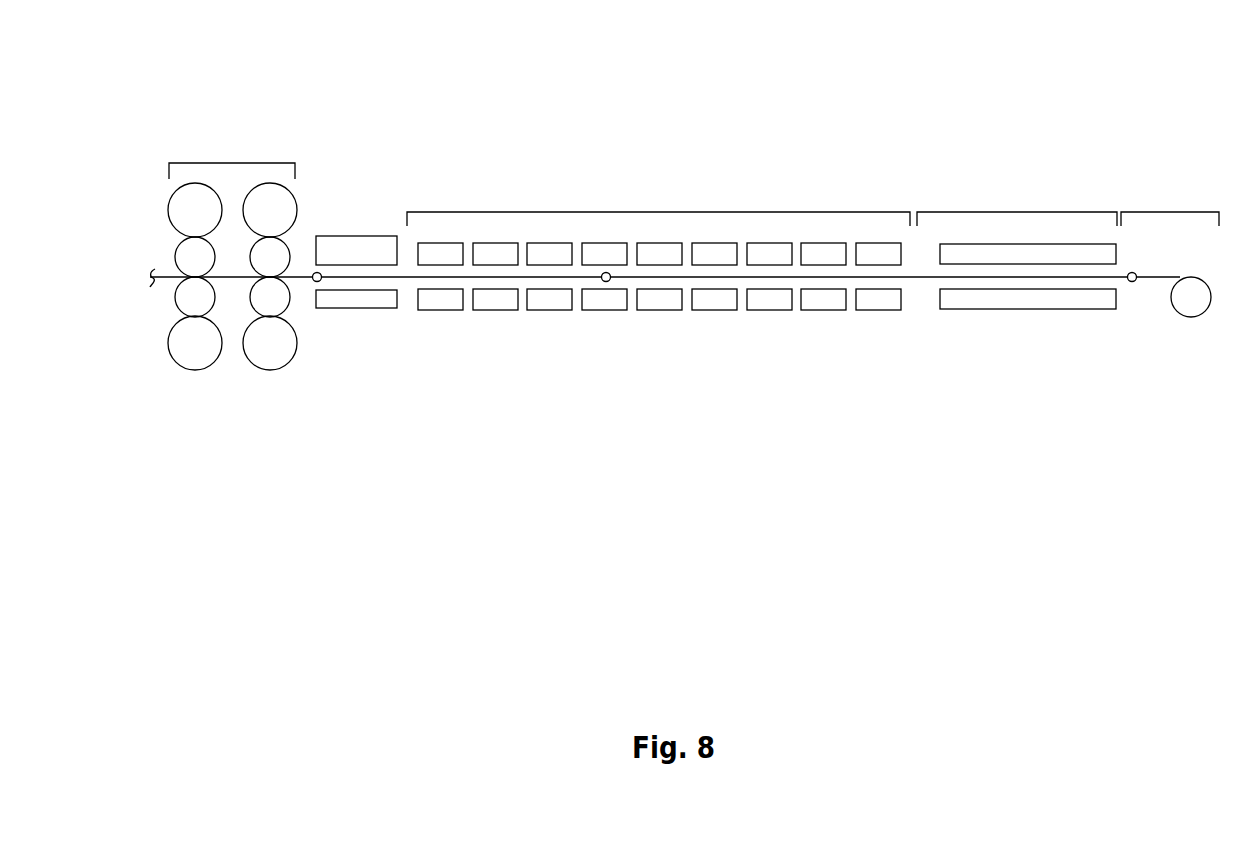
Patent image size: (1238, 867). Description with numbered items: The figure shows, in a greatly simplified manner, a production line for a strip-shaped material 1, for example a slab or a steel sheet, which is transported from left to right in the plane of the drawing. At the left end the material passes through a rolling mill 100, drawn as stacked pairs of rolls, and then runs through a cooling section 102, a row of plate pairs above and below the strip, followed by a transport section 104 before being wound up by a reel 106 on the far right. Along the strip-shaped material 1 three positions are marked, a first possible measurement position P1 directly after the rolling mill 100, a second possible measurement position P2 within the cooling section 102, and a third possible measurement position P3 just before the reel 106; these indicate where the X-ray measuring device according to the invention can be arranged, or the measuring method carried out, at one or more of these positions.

The strip-shaped material 1 is at (405, 275).
The rolling mill 100 is at (232, 163).
The cooling section 102 is at (695, 212).
The transport section 104 is at (1017, 212).
The reel 106 is at (1191, 212).
The first possible measurement position P1 is at (317, 282).
The second possible measurement position P2 is at (606, 282).
The third possible measurement position P3 is at (1132, 282).